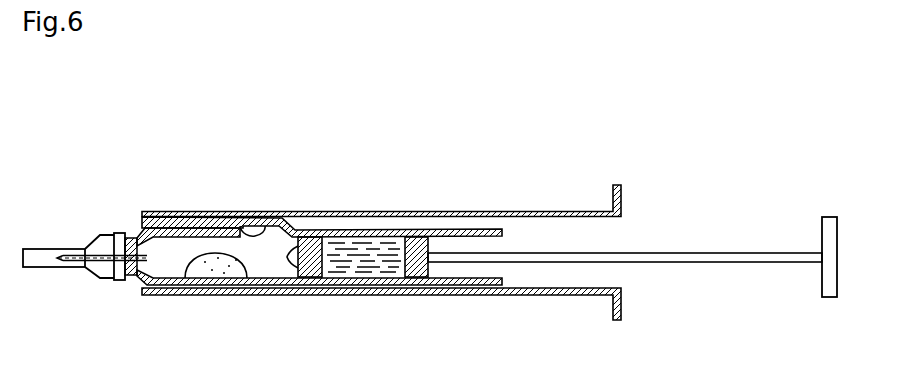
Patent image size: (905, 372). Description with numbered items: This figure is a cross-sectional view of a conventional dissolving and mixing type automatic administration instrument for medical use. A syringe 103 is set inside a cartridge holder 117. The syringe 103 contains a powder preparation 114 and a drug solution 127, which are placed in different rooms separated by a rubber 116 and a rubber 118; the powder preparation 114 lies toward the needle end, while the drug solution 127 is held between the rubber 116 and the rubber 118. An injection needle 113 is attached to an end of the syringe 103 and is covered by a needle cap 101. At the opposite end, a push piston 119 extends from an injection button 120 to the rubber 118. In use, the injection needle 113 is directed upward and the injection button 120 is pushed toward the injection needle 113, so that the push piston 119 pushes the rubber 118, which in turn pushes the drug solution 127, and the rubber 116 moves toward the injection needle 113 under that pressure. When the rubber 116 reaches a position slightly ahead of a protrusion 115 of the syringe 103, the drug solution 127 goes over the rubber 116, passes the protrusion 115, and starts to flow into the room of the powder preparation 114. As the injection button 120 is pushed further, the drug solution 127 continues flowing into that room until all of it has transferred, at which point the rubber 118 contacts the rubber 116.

The needle cap 101 is at (43, 267).
The injection needle 113 is at (73, 252).
The powder preparation 114 is at (201, 262).
The protrusion 115 is at (241, 224).
The cartridge holder 117 is at (327, 212).
The syringe 103 is at (474, 229).
The drug solution 127 is at (392, 245).
The rubber 116 is at (304, 282).
The rubber 118 is at (413, 282).
The push piston 119 is at (700, 254).
The injection button 120 is at (832, 219).